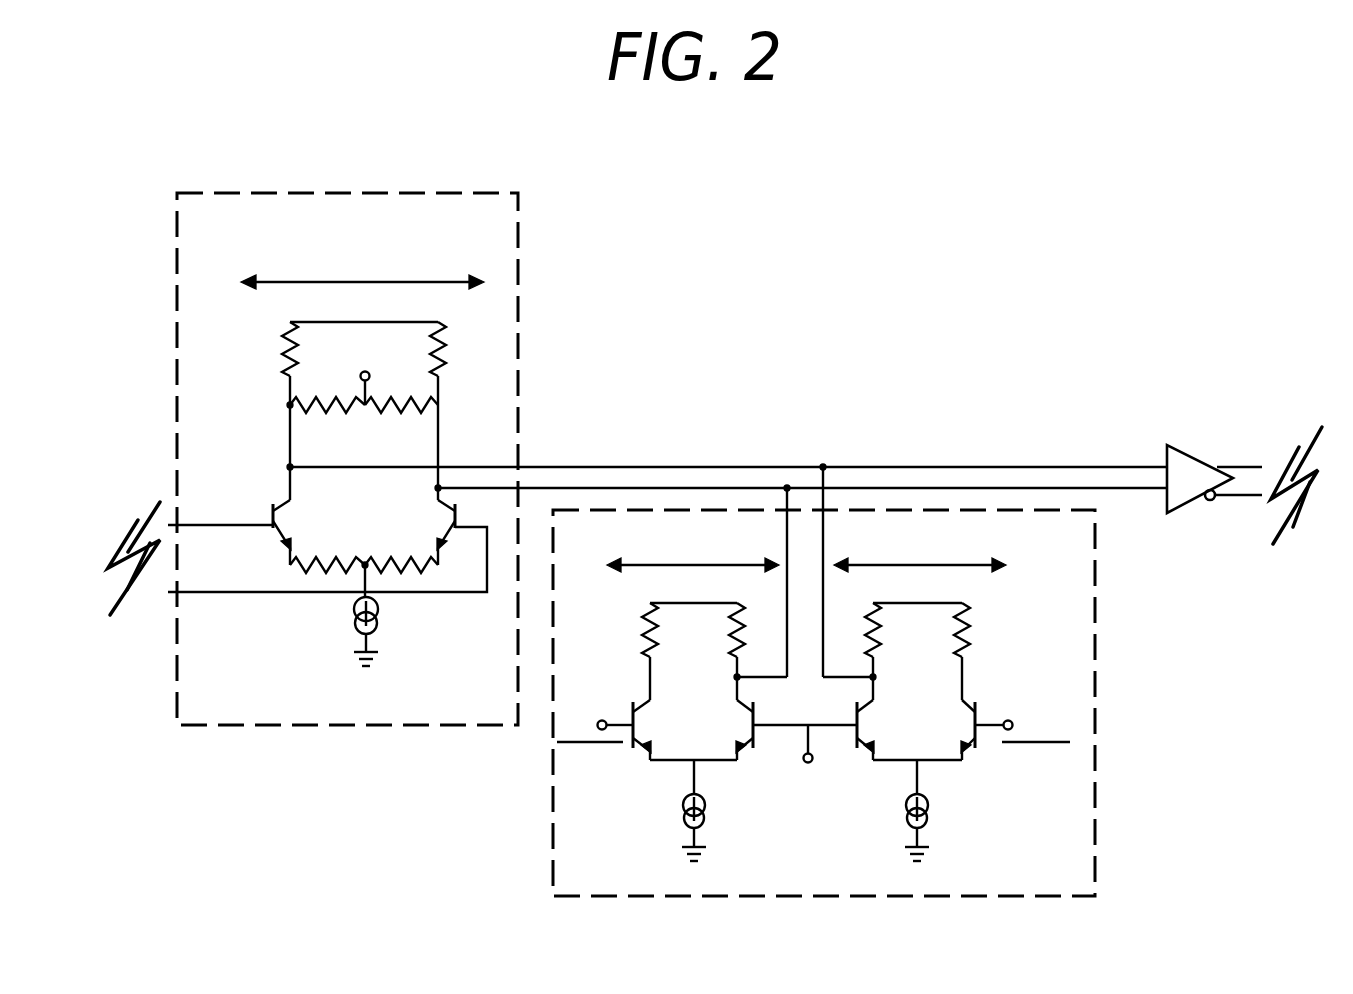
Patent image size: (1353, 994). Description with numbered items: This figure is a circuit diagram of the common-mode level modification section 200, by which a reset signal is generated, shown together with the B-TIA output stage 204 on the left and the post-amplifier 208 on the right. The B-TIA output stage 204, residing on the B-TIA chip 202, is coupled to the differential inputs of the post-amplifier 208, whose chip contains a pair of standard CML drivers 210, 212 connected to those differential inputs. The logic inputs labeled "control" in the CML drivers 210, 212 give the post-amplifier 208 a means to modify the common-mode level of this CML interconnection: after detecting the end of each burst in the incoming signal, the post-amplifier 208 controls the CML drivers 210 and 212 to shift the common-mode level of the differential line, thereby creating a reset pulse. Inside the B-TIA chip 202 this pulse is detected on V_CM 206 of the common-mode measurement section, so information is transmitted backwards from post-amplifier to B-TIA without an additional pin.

The common-mode level modification section 200 is at (1036, 171).
The B-TIA chip 202 is at (473, 710).
The B-TIA output stage 204 is at (562, 278).
The V_CM 206 is at (370, 376).
The post-amplifier 208 is at (1174, 489).
The CML driver 210 is at (673, 594).
The CML driver 212 is at (903, 594).